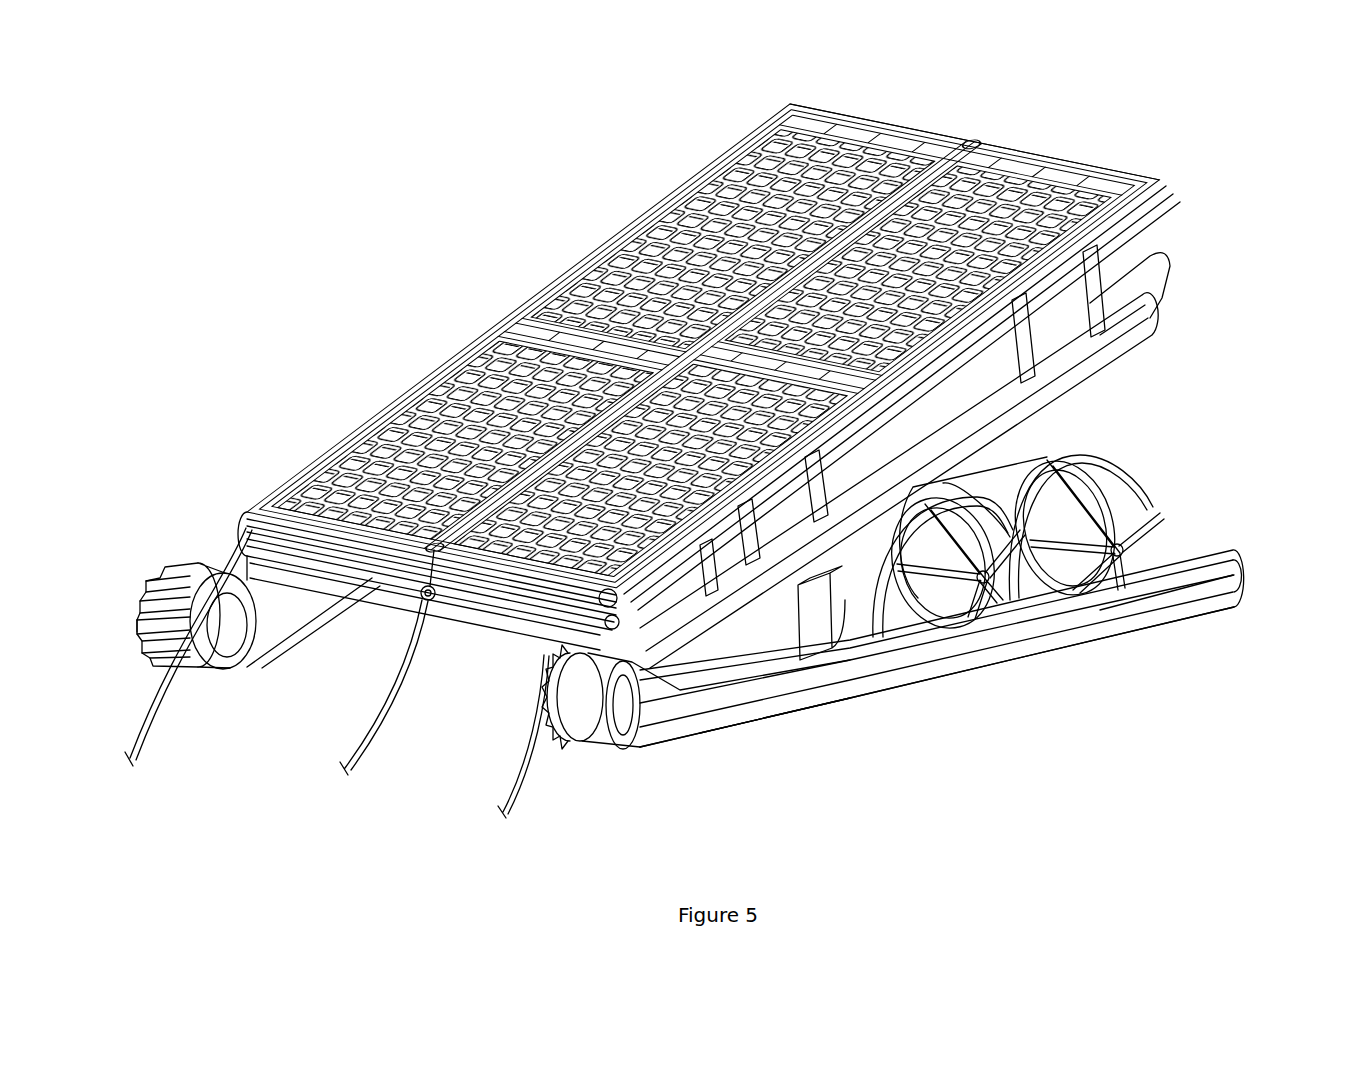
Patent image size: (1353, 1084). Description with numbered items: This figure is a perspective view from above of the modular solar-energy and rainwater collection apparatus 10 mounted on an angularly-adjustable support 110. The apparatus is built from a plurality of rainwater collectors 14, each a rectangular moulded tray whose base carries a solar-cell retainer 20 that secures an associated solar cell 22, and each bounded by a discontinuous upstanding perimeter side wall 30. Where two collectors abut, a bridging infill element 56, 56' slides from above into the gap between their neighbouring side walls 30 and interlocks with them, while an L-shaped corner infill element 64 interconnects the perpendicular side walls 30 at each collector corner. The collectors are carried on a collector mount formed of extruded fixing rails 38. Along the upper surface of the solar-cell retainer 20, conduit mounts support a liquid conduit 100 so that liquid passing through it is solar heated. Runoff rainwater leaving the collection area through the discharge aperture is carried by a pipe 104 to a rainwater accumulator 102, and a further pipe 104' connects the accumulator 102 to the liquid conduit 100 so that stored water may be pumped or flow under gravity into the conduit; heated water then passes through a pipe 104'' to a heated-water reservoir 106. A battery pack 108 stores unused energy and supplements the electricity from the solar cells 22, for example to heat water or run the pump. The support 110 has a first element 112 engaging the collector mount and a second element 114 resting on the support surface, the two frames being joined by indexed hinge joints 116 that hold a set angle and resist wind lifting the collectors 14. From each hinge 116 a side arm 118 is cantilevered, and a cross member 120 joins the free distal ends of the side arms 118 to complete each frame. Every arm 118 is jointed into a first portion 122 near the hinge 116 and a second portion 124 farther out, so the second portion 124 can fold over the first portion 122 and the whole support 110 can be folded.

The modular solar-energy and rainwater collection apparatus 10 is at (312, 207).
The rainwater collector 14 is at (930, 108).
The solar-cell retainer 20 is at (1167, 181).
The solar cell 22 is at (638, 212).
The perimeter side wall 30 is at (1125, 237).
The fixing rail 38 is at (1093, 290).
The bridging infill element 56 is at (1021, 513).
The bridging infill element 56' is at (420, 605).
The corner infill element 64 is at (1166, 207).
The liquid conduit 100 is at (392, 406).
The rainwater accumulator 102 is at (1097, 630).
The pipe 104 is at (369, 687).
The pipe 104' is at (188, 639).
The pipe 104'' is at (505, 736).
The heated-water reservoir 106 is at (1240, 592).
The battery pack 108 is at (927, 643).
The angularly-adjustable support 110 is at (1228, 522).
The first element 112 is at (1100, 355).
The second element 114 is at (828, 720).
The hinge joint 116 is at (578, 695).
The side arm 118 is at (1135, 630).
The cross member 120 is at (1193, 520).
The first portion 122 is at (878, 686).
The second portion 124 is at (990, 647).